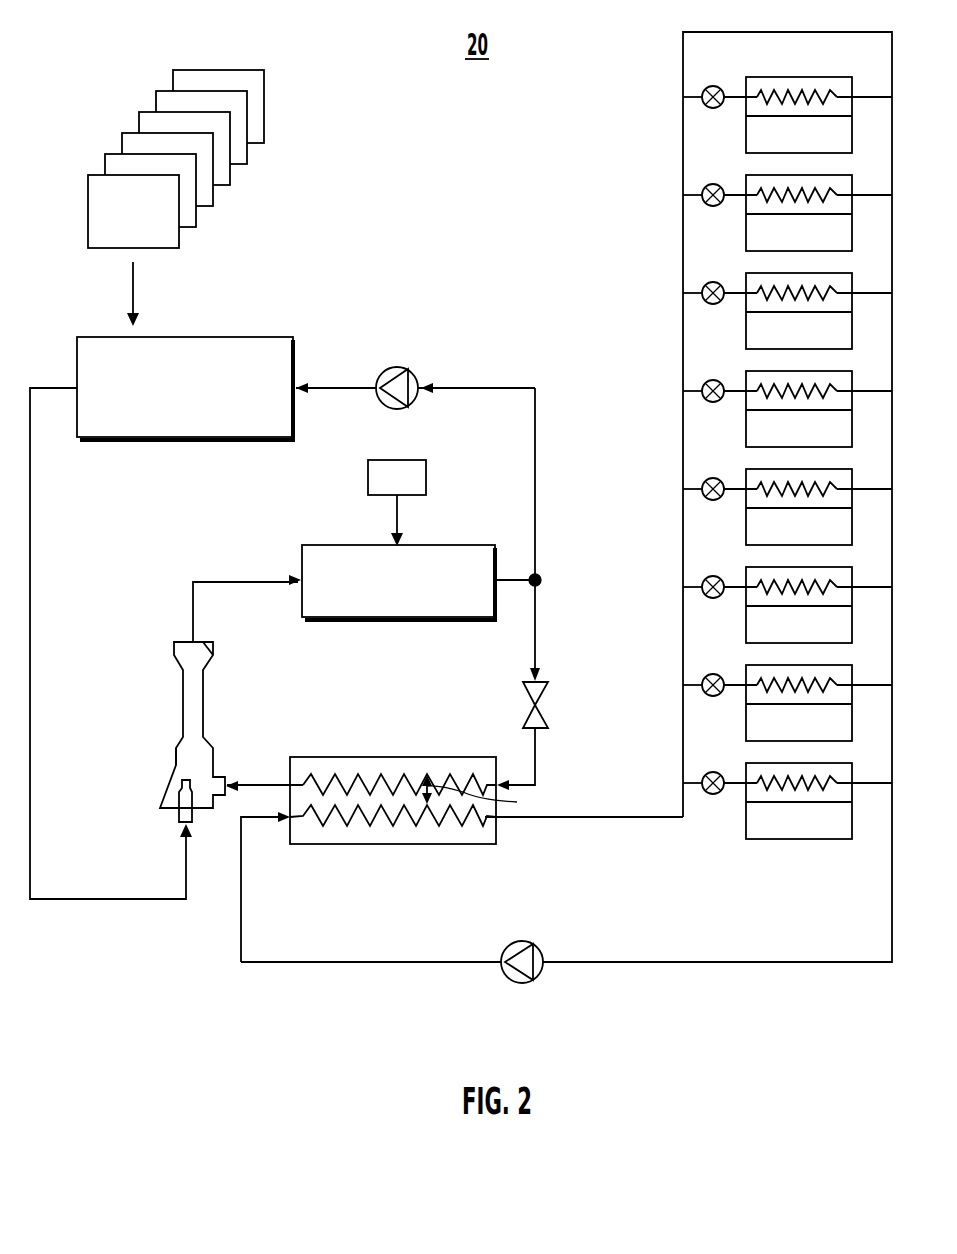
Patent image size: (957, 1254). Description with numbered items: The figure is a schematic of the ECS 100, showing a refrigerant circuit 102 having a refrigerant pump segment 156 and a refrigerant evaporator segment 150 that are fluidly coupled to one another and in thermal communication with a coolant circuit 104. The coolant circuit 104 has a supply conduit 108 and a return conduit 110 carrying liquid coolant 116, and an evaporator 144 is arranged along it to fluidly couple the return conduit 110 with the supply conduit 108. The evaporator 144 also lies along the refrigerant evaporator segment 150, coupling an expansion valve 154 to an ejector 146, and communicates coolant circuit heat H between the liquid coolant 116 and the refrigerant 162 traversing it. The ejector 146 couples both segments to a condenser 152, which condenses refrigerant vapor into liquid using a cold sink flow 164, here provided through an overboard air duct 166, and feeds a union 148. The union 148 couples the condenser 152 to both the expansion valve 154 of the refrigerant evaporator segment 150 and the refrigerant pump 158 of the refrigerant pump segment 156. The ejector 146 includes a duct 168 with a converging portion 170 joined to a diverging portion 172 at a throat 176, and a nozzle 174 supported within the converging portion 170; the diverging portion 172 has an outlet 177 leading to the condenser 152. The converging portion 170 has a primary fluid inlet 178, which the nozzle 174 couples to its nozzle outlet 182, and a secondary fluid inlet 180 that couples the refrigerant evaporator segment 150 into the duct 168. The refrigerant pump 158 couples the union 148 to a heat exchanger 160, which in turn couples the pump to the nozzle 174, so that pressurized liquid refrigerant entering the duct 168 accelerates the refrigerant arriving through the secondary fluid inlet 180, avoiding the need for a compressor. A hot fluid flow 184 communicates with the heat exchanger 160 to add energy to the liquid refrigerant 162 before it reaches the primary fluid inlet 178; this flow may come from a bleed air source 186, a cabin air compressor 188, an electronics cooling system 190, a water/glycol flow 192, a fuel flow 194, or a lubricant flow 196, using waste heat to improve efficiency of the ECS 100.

The ECS 100 is at (175, 1031).
The refrigerant circuit 102 is at (90, 932).
The coolant circuit 104 is at (700, 978).
The supply conduit 108 is at (603, 817).
The return conduit 110 is at (338, 962).
The liquid coolant 116 is at (298, 886).
The evaporator 144 is at (338, 757).
The ejector 146 is at (199, 746).
The union 148 is at (541, 580).
The refrigerant evaporator segment 150 is at (561, 638).
The condenser 152 is at (340, 620).
The expansion valve 154 is at (548, 690).
The refrigerant pump segment 156 is at (284, 364).
The refrigerant pump 158 is at (383, 403).
The heat exchanger 160 is at (266, 440).
The refrigerant 162 is at (172, 617).
The cold sink flow 164 is at (397, 518).
The overboard air duct 166 is at (426, 478).
The duct 168 is at (205, 695).
The converging portion 170 is at (178, 741).
The diverging portion 172 is at (213, 660).
The nozzle 174 is at (195, 790).
The throat 176 is at (195, 715).
The outlet 177 is at (185, 636).
The primary fluid inlet 178 is at (175, 818).
The secondary fluid inlet 180 is at (220, 772).
The nozzle outlet 182 is at (183, 779).
The hot fluid flow 184 is at (133, 295).
The bleed air source 186 is at (88, 217).
The cabin air compressor 188 is at (105, 166).
The electronics cooling system 190 is at (132, 133).
The water/glycol flow 192 is at (220, 190).
The fuel flow 194 is at (237, 167).
The lubricant flow 196 is at (265, 120).
The coolant circuit heat H is at (482, 799).